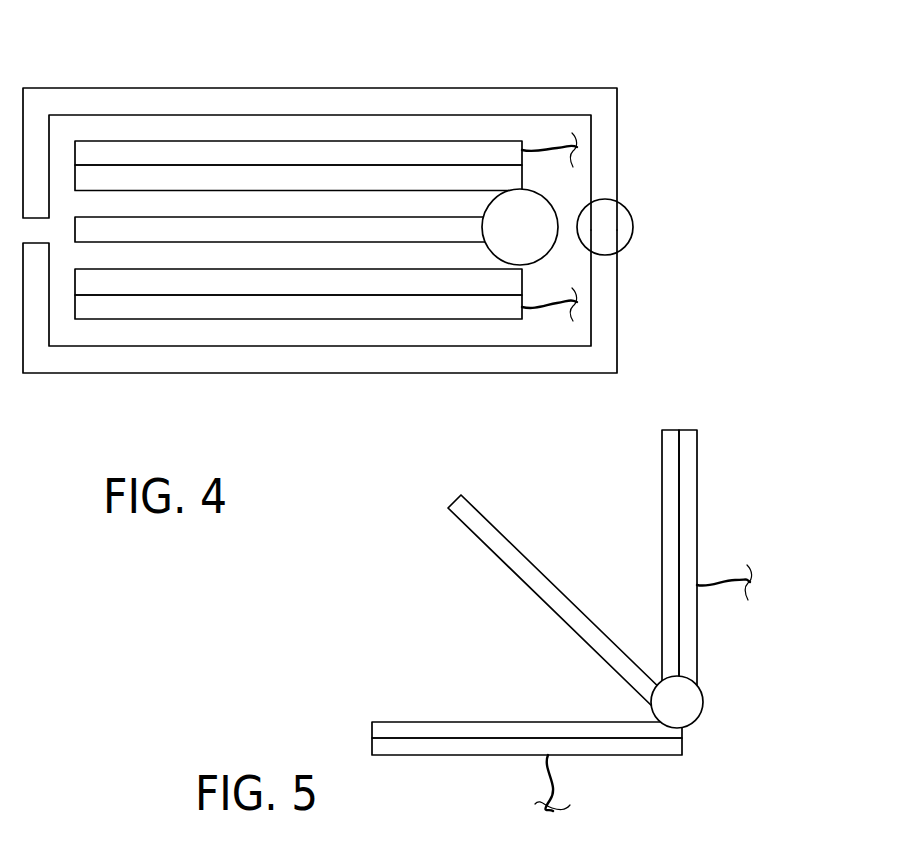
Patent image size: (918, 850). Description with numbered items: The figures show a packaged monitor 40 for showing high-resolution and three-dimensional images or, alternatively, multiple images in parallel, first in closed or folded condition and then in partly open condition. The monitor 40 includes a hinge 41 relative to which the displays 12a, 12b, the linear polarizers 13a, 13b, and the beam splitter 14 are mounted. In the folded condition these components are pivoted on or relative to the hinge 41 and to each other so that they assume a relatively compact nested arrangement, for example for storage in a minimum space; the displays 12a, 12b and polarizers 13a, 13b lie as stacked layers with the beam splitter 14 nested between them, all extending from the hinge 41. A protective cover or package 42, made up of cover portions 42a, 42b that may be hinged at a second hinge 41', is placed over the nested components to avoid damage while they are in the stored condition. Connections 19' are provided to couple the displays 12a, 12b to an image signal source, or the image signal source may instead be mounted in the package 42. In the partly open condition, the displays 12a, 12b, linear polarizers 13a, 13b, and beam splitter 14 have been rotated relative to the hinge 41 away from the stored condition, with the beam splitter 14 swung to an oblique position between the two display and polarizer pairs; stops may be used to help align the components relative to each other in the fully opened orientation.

In FIG. 4, the monitor 40 is at (669, 94).
In FIG. 5, the monitor 40 is at (745, 639).
In FIG. 4, the protective cover or package 42 is at (375, 240).
In FIG. 4, the cover portion 42a is at (93, 88).
In FIG. 4, the cover portion 42b is at (113, 363).
In FIG. 4, the display 12a is at (185, 152).
In FIG. 5, the display 12a is at (688, 470).
In FIG. 4, the linear polarizer 13a is at (298, 178).
In FIG. 5, the linear polarizer 13a is at (665, 455).
In FIG. 4, the beam splitter 14 is at (419, 223).
In FIG. 5, the beam splitter 14 is at (530, 560).
In FIG. 4, the display 12b is at (278, 305).
In FIG. 5, the display 12b is at (435, 747).
In FIG. 4, the linear polarizer 13b is at (363, 282).
In FIG. 5, the linear polarizer 13b is at (488, 728).
In FIG. 4, the connections 19' is at (599, 184).
In FIG. 5, the connections 19' is at (654, 652).
In FIG. 4, the hinge 41 is at (586, 207).
In FIG. 4, the hinge 41' is at (634, 227).